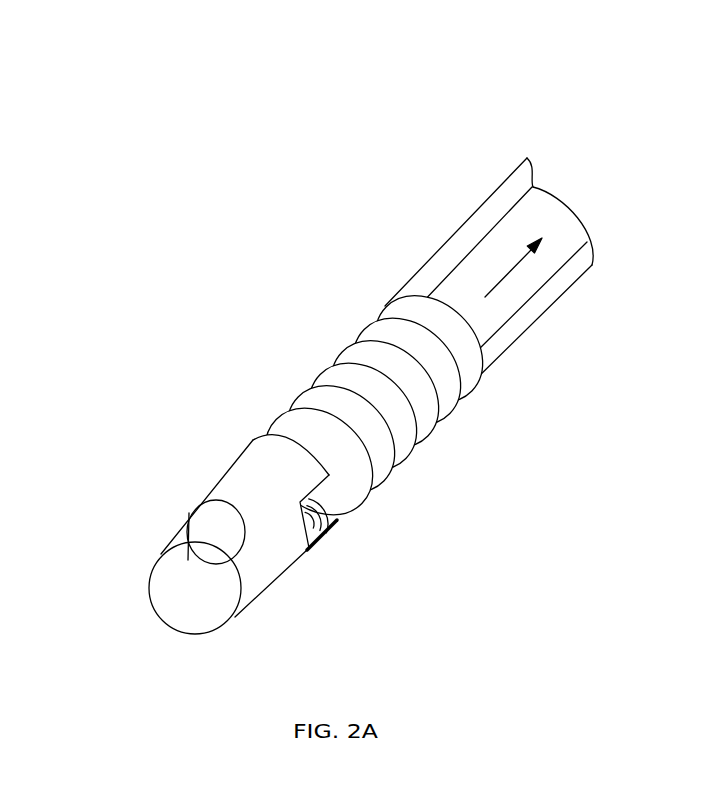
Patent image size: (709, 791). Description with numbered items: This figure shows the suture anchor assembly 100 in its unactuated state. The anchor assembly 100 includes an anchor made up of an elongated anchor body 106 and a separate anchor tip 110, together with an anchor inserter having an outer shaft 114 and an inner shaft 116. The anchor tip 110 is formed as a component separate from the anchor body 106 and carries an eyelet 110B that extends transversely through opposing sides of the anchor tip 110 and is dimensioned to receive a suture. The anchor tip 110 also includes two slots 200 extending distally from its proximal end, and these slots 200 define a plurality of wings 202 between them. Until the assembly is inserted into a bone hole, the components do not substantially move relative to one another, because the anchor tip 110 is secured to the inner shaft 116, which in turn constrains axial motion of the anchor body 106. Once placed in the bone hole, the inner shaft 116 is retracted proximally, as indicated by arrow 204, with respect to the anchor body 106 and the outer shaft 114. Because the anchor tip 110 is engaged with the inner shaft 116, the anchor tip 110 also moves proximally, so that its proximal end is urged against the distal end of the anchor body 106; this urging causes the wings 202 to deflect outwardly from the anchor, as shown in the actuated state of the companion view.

The anchor assembly 100 is at (251, 229).
The outer shaft 114 is at (502, 212).
The inner shaft 116 is at (482, 263).
The arrow 204 is at (517, 267).
The anchor body 106 is at (348, 360).
The wings 202 is at (256, 437).
The eyelet 110B is at (202, 532).
The slots 200 is at (336, 519).
The anchor tip 110 is at (326, 609).